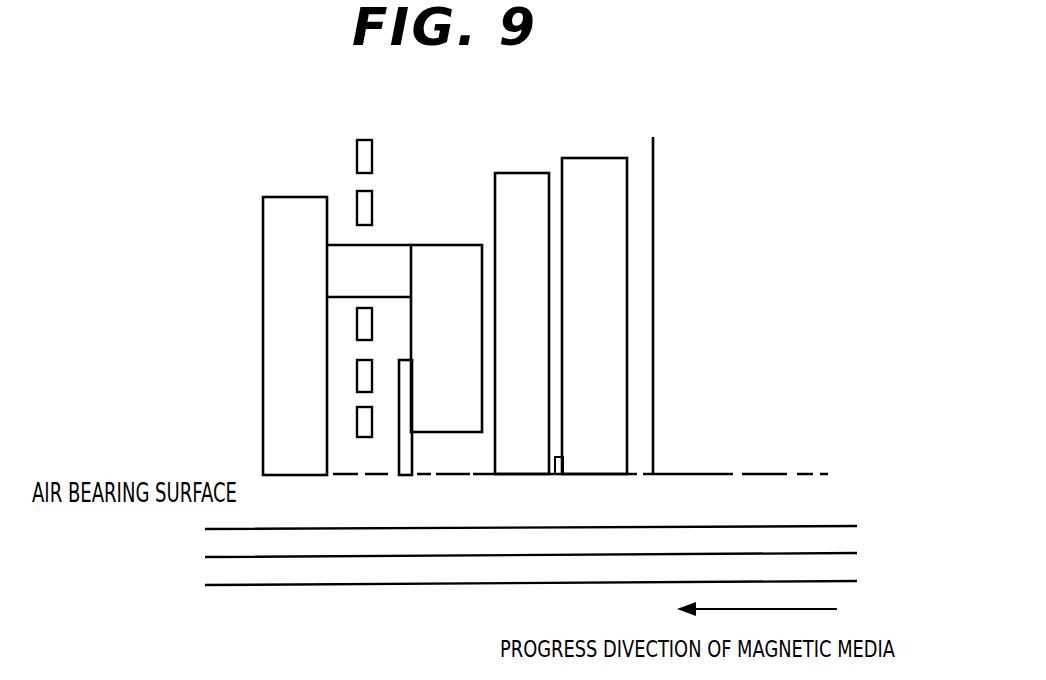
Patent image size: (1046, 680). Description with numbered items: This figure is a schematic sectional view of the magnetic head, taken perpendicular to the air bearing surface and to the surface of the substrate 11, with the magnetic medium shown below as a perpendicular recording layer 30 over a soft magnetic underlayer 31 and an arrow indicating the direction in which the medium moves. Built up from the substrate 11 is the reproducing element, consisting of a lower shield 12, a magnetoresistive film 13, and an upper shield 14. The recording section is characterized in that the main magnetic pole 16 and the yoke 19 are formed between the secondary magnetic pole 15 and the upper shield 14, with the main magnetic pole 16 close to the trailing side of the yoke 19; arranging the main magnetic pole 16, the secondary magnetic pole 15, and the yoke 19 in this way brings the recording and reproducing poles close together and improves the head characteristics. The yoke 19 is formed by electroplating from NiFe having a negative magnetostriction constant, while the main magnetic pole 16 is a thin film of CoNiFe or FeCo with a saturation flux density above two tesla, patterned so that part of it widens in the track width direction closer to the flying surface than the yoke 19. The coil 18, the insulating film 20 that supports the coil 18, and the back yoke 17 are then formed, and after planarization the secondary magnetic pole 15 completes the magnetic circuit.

The substrate 11 is at (677, 407).
The lower shield 12 is at (602, 462).
The magnetoresistive film 13 is at (560, 460).
The upper shield 14 is at (522, 462).
The secondary magnetic pole 15 is at (277, 337).
The main magnetic pole 16 is at (410, 476).
The back yoke 17 is at (387, 267).
The coil 18 is at (366, 153).
The yoke 19 is at (455, 420).
The insulating film 20 is at (385, 328).
The perpendicular recording layer 30 is at (222, 541).
The soft magnetic underlayer 31 is at (222, 566).